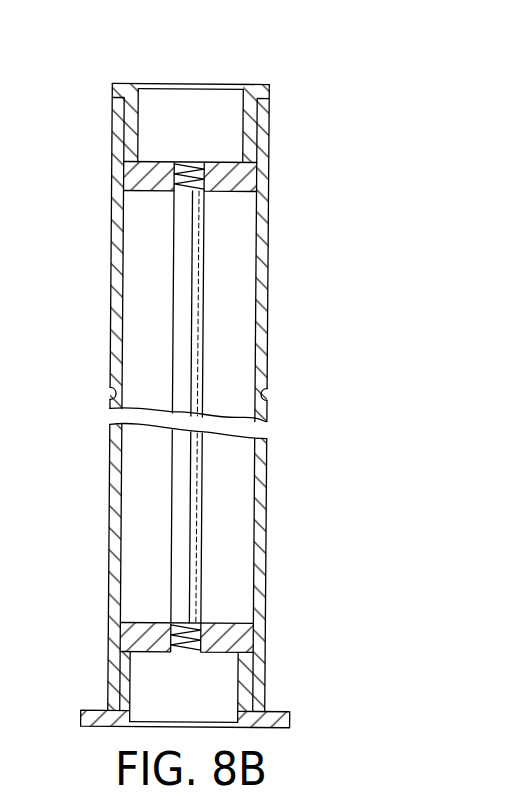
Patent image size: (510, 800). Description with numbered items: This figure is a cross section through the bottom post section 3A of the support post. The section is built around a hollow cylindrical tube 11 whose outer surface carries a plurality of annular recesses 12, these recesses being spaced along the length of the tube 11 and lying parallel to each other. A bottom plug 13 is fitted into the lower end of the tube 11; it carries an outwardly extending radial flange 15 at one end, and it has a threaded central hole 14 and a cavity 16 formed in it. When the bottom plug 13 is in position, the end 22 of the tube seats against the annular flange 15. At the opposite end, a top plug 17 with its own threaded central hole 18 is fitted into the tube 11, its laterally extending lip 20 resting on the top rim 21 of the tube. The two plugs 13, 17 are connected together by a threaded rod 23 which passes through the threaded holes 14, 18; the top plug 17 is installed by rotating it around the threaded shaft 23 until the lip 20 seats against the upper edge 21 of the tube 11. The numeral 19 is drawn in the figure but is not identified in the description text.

The bottom post section 3A is at (274, 528).
The hollow cylindrical tube 11 is at (116, 511).
The annular recesses 12 is at (111, 394).
The bottom plug 13 is at (135, 630).
The threaded central hole 14 is at (196, 653).
The radial flange 15 is at (85, 718).
The cavity 16 is at (240, 712).
The top plug 17 is at (237, 187).
The threaded central hole 18 is at (188, 170).
The upper cap right block 19 is at (242, 98).
The laterally extending lip 20 is at (121, 84).
The top rim 21 is at (118, 112).
The end of the tube 22 is at (112, 708).
The threaded rod 23 is at (176, 343).